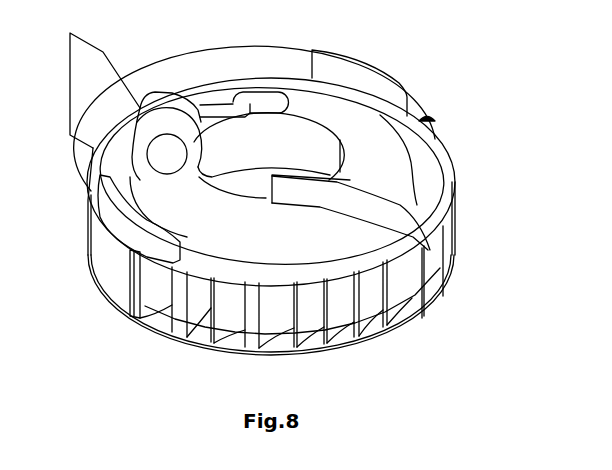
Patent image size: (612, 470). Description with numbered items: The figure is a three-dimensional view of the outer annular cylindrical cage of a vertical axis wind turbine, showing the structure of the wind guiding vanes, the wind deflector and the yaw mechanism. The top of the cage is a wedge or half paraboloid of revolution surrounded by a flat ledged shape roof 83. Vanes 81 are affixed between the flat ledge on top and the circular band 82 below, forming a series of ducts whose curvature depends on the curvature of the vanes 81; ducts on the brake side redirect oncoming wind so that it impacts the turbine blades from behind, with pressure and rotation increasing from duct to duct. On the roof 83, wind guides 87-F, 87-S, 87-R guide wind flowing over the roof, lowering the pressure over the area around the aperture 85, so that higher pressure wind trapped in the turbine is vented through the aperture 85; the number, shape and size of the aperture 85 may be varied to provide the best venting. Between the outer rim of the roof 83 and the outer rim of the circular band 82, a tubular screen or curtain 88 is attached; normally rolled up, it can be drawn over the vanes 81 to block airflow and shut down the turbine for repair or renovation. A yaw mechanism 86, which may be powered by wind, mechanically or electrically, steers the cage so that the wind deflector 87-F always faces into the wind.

The vanes 81 is at (133, 320).
The circular band 82 is at (167, 323).
The flat ledged shape roof 83 is at (380, 165).
The aperture 85 is at (147, 153).
The yaw mechanism 86 is at (83, 83).
The wind guide 87-R is at (207, 102).
The wind guide 87-S is at (388, 78).
The wind deflector 87-F is at (340, 197).
The tubular screen or curtain 88 is at (434, 121).